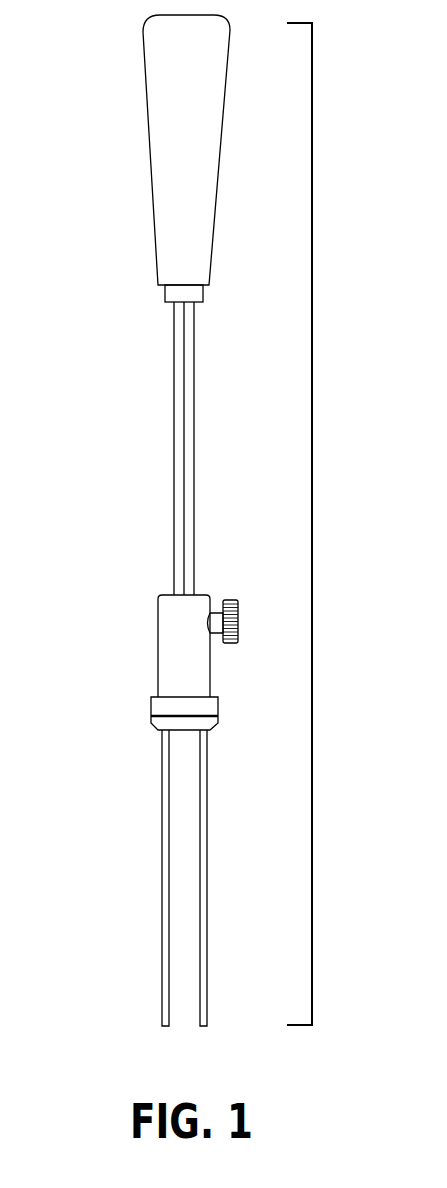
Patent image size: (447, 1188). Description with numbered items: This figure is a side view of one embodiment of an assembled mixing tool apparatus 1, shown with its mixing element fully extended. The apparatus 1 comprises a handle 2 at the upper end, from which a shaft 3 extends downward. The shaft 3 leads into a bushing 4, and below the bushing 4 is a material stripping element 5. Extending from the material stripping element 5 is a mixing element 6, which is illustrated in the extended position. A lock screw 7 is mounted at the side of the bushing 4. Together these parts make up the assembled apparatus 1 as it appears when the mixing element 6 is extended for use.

The mixing tool apparatus 1 is at (325, 524).
The handle 2 is at (155, 196).
The shaft 3 is at (174, 545).
The bushing 4 is at (158, 672).
The material stripping element 5 is at (151, 725).
The mixing element 6 is at (162, 893).
The lock screw 7 is at (238, 623).